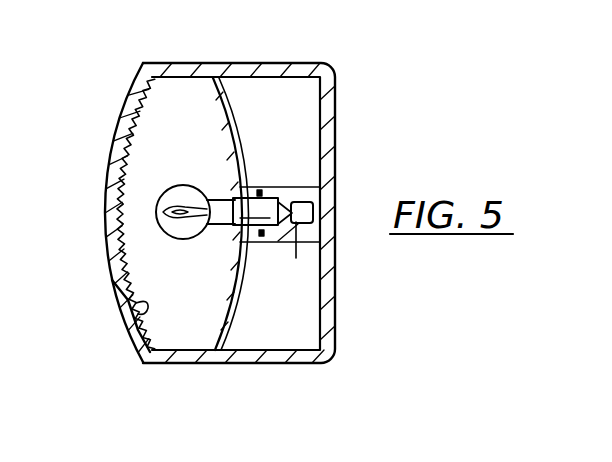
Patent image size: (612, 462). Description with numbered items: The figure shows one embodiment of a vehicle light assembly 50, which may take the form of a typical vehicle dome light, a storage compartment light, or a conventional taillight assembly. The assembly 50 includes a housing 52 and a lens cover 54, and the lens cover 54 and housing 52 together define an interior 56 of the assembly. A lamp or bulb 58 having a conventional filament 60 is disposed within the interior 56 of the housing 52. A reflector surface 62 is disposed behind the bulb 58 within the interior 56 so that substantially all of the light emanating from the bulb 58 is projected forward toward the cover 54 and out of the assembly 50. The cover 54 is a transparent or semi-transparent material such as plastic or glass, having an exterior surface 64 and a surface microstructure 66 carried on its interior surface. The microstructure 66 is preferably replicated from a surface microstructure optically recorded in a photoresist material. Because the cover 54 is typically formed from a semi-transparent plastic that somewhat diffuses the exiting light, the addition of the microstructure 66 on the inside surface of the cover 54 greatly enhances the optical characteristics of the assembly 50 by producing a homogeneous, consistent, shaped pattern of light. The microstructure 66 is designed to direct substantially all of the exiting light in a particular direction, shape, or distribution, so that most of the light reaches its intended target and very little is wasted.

The vehicle light assembly 50 is at (340, 10).
The housing 52 is at (337, 82).
The lens cover 54 is at (128, 98).
The interior 56 is at (192, 152).
The bulb 58 is at (158, 204).
The filament 60 is at (165, 222).
The reflector surface 62 is at (214, 325).
The exterior surface 64 is at (115, 286).
The surface microstructure 66 is at (140, 311).